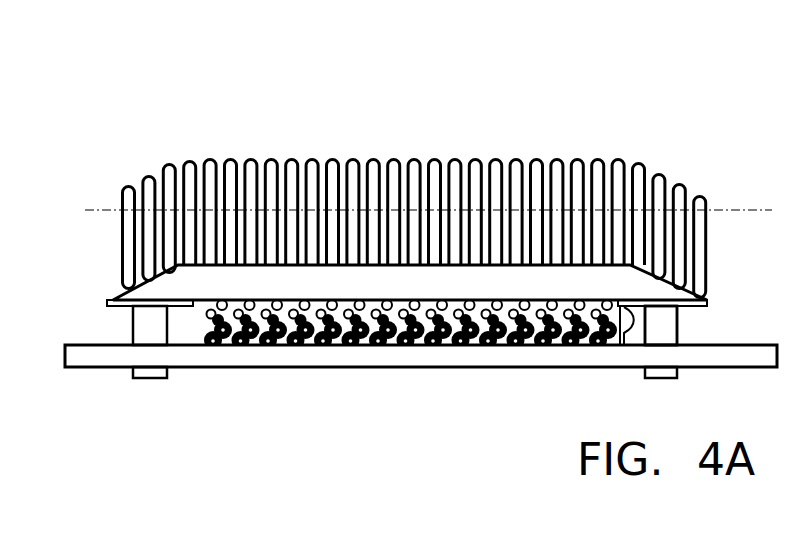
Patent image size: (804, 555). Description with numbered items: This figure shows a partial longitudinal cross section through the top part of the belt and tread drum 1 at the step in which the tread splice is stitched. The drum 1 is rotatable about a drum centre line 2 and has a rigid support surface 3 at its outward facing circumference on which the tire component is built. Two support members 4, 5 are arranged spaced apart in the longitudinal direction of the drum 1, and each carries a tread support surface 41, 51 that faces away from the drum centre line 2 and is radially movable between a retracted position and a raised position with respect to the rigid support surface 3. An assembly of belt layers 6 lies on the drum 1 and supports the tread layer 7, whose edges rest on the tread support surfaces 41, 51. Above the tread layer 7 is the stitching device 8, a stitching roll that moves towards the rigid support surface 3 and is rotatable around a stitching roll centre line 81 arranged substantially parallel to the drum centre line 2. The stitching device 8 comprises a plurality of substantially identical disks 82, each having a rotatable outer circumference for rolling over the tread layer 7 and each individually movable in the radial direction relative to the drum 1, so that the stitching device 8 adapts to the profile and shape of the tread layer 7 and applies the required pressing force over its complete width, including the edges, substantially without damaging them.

The belt and tread drum 1 is at (332, 358).
The drum centre line 2 is at (662, 303).
The rigid support surface 3 is at (742, 346).
The support member 4 is at (155, 373).
The tread support surface 41 is at (117, 302).
The support member 5 is at (663, 375).
The tread support surface 51 is at (675, 323).
The assembly of belt layers 6 is at (640, 322).
The tread layer 7 is at (573, 293).
The stitching device 8 is at (286, 149).
The stitching roll centre line 81 is at (444, 213).
The disks 82 is at (192, 160).